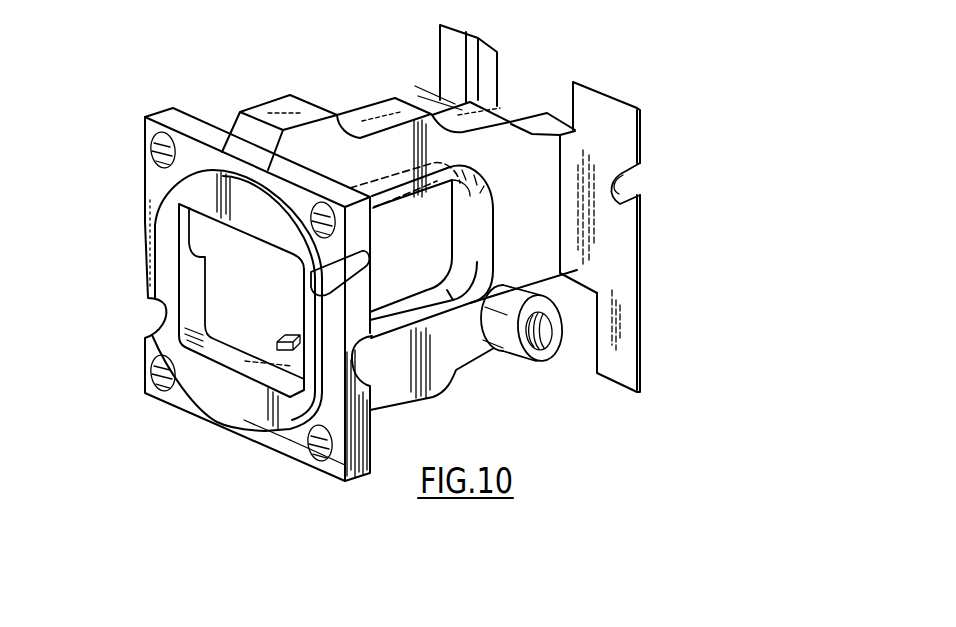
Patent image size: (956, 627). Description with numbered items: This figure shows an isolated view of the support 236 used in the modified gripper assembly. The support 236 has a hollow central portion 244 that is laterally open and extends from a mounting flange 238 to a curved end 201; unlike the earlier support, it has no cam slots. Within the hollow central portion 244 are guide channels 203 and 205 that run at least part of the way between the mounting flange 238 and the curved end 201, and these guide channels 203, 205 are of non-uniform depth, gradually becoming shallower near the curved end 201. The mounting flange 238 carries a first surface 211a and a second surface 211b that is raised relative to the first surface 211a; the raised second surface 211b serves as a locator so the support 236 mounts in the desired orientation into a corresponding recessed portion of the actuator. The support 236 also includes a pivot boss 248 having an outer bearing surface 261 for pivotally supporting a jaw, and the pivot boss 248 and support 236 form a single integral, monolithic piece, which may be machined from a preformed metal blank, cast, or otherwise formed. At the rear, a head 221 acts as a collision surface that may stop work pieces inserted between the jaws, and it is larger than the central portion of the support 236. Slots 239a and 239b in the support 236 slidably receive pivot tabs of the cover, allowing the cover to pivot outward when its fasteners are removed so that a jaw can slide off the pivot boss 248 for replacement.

The curved end 201 is at (474, 237).
The guide channel 203 is at (382, 317).
The guide channel 205 is at (403, 192).
The first surface 211a is at (293, 443).
The second surface 211b is at (265, 420).
The head 221 is at (643, 270).
The support 236 is at (363, 100).
The mounting flange 238 is at (145, 172).
The slot 239a is at (618, 188).
The slot 239b is at (320, 281).
The hollow central portion 244 is at (273, 308).
The pivot boss 248 is at (549, 361).
The outer bearing surface 261 is at (507, 321).